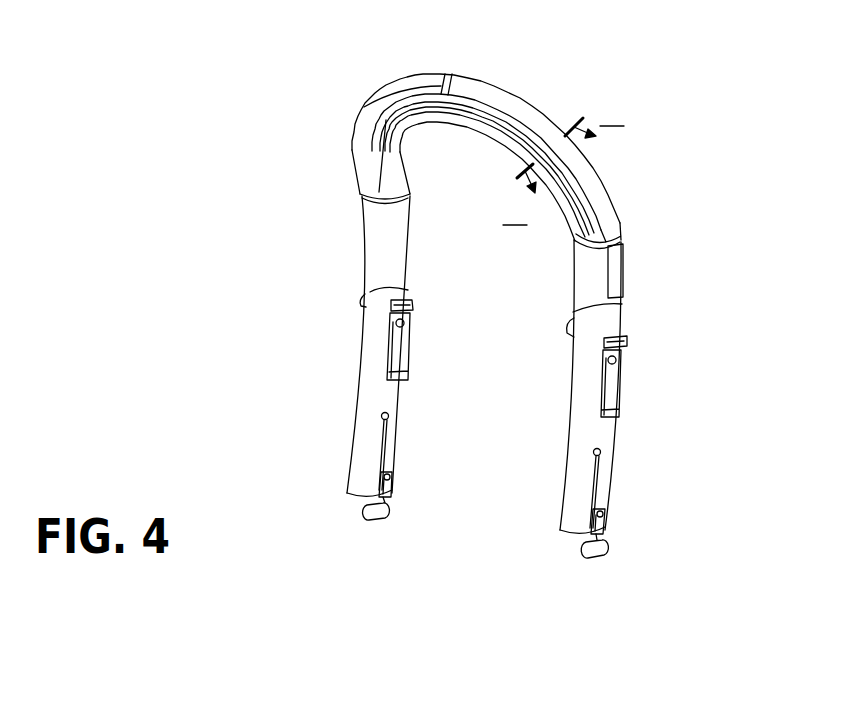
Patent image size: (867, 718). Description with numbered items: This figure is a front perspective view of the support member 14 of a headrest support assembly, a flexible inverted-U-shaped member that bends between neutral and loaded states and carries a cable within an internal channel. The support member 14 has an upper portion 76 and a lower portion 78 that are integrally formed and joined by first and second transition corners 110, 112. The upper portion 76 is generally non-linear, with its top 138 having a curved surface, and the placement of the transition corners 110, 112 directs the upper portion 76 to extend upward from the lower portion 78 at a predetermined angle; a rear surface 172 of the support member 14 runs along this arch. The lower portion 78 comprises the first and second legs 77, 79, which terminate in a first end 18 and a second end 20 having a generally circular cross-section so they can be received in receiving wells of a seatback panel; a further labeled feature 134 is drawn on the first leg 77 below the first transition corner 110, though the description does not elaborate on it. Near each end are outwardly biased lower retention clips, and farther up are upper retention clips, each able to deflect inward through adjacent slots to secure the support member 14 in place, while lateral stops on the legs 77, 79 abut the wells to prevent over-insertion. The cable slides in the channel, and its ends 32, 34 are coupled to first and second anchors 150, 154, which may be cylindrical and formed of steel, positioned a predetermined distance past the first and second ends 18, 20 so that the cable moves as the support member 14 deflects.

The support member 14 is at (333, 80).
The top 138 is at (502, 104).
The rear surface 172 is at (593, 163).
The upper portion 76 is at (603, 223).
The second transition corner 112 is at (590, 247).
The first transition corner 110 is at (378, 215).
The left leg edge 134 is at (393, 262).
The first leg 77 is at (382, 393).
The lower portion 78 is at (368, 427).
The first end 18 is at (347, 492).
The first end of cable 32 is at (363, 508).
The first anchor 150 is at (373, 518).
The second end 20 is at (565, 531).
The second anchor 154 is at (584, 551).
The second end of cable 34 is at (600, 553).
The second leg 79 is at (598, 430).